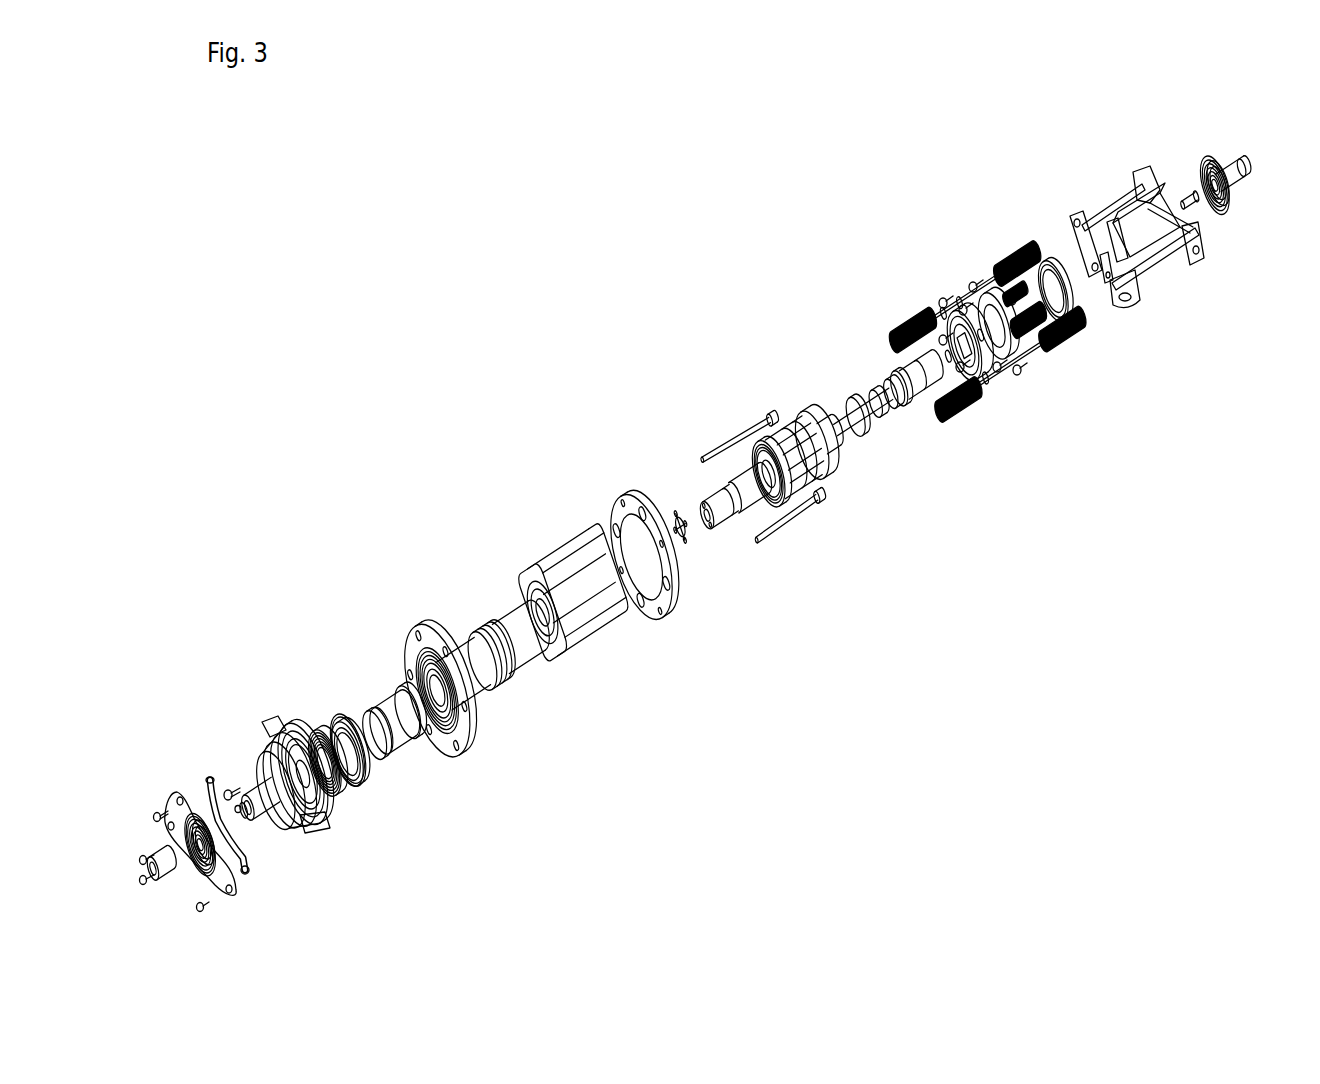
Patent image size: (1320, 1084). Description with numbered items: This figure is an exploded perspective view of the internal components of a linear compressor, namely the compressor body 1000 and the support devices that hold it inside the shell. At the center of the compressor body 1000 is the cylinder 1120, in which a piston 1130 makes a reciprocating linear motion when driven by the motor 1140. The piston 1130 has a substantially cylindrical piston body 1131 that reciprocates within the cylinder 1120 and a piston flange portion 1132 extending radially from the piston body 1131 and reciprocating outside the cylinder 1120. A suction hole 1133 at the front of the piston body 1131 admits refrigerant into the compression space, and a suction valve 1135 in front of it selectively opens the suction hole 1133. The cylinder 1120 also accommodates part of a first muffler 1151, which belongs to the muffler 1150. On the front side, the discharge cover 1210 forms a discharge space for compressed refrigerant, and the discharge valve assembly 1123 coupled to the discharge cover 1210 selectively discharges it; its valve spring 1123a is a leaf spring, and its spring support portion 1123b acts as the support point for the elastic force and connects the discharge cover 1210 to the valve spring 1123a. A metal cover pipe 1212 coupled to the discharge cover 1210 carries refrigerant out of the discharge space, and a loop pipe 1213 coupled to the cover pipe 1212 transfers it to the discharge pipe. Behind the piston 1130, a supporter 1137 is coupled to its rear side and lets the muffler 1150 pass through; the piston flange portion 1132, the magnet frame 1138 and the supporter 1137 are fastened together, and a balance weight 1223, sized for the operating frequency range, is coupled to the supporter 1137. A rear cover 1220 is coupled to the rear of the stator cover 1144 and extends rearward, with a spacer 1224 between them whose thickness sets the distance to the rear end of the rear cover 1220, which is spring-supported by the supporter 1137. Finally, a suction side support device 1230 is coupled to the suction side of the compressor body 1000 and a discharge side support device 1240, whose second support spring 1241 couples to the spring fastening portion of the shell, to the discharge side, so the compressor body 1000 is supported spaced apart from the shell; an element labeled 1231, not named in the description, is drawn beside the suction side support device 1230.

The compressor body 1000 is at (303, 322).
The cylinder 1120 is at (377, 707).
The discharge valve assembly 1123 is at (344, 783).
The valve spring 1123a is at (312, 735).
The spring support portion 1123b is at (347, 803).
The piston 1130 is at (751, 485).
The piston body 1131 is at (720, 500).
The piston flange portion 1132 is at (777, 505).
The suction hole 1133 is at (707, 530).
The suction valve 1135 is at (681, 527).
The supporter 1137 is at (984, 372).
The magnet frame 1138 is at (797, 423).
The motor 1140 is at (538, 545).
The stator cover 1144 is at (620, 497).
The muffler 1150 is at (888, 452).
The first muffler 1151 is at (853, 432).
The discharge cover 1210 is at (287, 822).
The cover pipe 1212 is at (248, 752).
The loop pipe 1213 is at (210, 775).
The rear cover 1220 is at (1148, 282).
The balance weight 1223 is at (1057, 250).
The spacer 1224 is at (1099, 268).
The suction side support device 1230 is at (1236, 200).
The encoder disc 1231 is at (1201, 165).
The discharge side support device 1240 is at (168, 850).
The second support spring 1241 is at (168, 807).